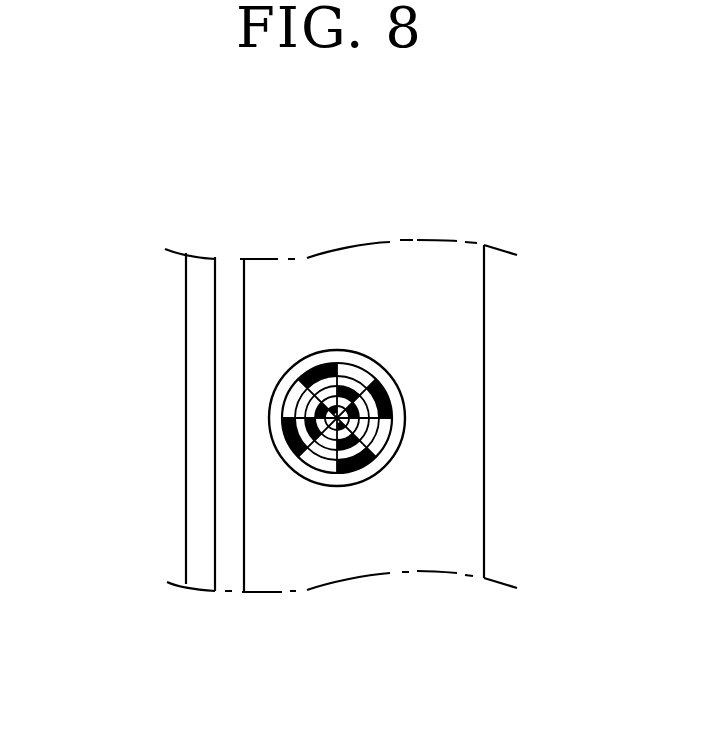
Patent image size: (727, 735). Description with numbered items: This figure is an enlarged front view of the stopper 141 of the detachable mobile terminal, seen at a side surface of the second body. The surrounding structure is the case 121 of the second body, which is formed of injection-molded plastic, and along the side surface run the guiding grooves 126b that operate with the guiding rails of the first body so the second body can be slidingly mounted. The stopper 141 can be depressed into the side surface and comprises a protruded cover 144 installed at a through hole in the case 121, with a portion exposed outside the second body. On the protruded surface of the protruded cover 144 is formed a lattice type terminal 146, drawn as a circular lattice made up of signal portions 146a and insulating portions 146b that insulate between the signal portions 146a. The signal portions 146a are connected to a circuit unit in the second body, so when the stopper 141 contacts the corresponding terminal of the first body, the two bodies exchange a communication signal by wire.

The case 121 is at (312, 275).
The guiding grooves 126b is at (232, 268).
The stopper 141 is at (405, 395).
The protruded cover 144 is at (345, 486).
The lattice type terminal 146 is at (206, 422).
The signal portions 146a is at (285, 430).
The insulating portions 146b is at (288, 400).